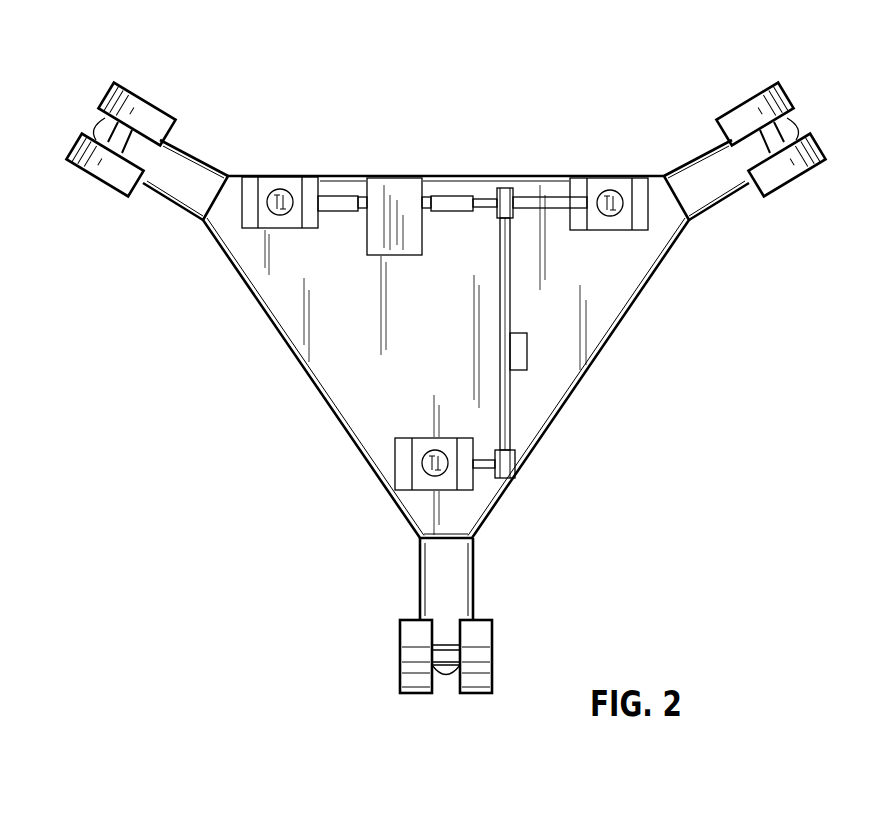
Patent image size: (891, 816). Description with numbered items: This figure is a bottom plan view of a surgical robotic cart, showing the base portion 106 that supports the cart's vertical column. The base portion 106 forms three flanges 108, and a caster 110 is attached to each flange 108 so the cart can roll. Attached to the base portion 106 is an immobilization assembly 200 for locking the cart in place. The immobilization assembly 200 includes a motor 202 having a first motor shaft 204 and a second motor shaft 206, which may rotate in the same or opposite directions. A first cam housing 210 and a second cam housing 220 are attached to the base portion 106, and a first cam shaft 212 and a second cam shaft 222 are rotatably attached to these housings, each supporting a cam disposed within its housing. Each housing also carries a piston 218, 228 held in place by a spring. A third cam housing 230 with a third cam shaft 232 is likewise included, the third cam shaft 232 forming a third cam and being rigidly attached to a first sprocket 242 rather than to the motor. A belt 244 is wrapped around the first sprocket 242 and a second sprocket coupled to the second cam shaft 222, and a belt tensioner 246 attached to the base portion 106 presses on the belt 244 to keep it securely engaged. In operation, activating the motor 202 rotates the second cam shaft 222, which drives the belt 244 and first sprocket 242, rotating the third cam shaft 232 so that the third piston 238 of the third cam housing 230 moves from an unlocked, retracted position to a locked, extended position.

The base portion 106 is at (283, 437).
The flange 108 is at (193, 163).
The caster 110 is at (127, 90).
The immobilization assembly 200 is at (606, 108).
The motor 202 is at (398, 183).
The first motor shaft 204 is at (362, 197).
The second motor shaft 206 is at (430, 195).
The first cam housing 210 is at (248, 183).
The first cam shaft 212 is at (311, 194).
The piston 218 is at (275, 189).
The second cam housing 220 is at (640, 183).
The second cam shaft 222 is at (563, 195).
The piston 228 is at (612, 191).
The third cam housing 230 is at (402, 452).
The third cam shaft 232 is at (488, 474).
The third piston 238 is at (427, 472).
The first sprocket 242 is at (524, 473).
The belt 244 is at (510, 273).
The belt tensioner 246 is at (528, 362).